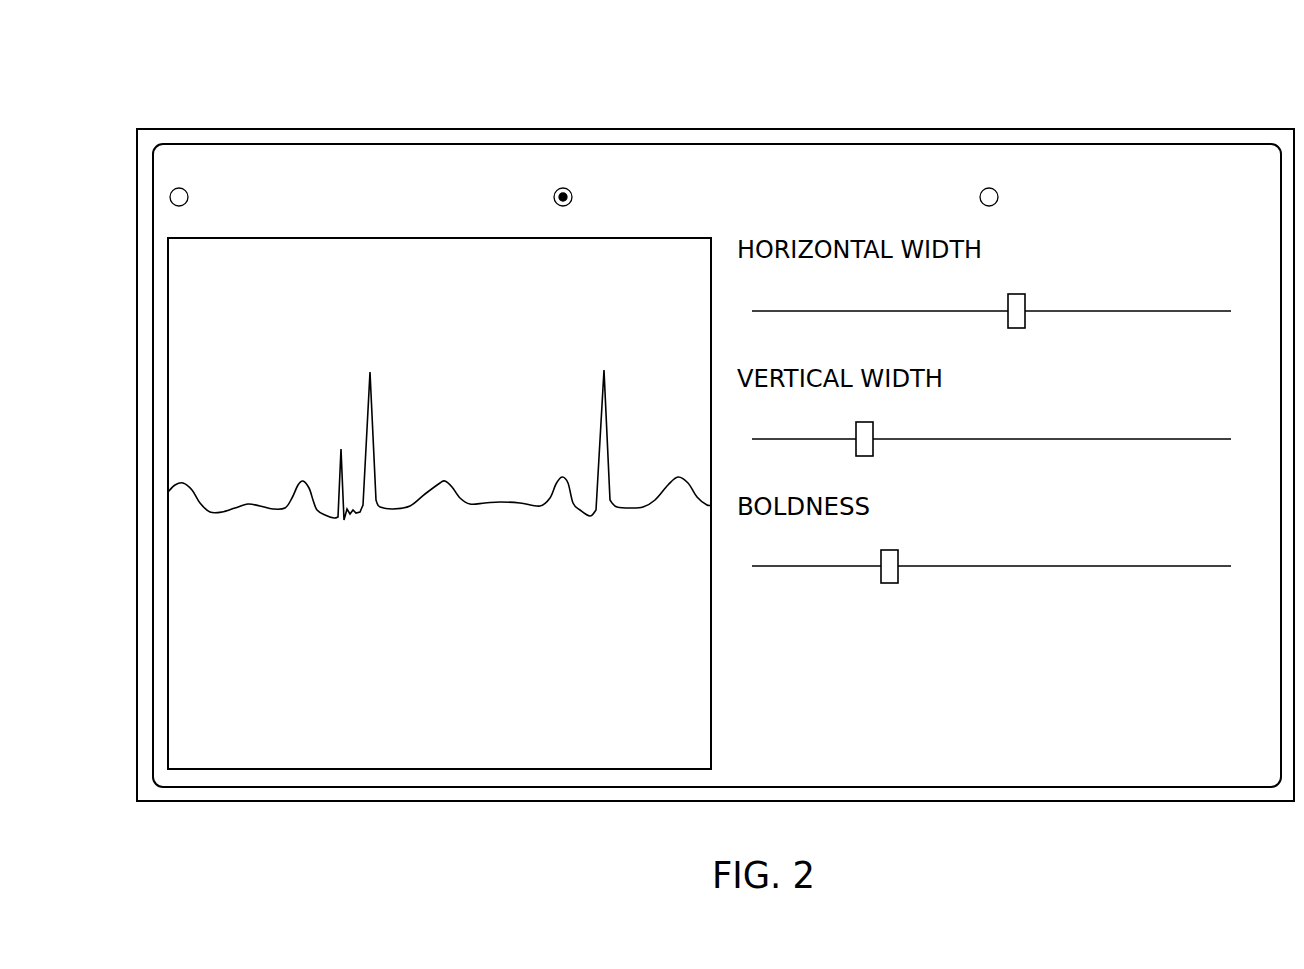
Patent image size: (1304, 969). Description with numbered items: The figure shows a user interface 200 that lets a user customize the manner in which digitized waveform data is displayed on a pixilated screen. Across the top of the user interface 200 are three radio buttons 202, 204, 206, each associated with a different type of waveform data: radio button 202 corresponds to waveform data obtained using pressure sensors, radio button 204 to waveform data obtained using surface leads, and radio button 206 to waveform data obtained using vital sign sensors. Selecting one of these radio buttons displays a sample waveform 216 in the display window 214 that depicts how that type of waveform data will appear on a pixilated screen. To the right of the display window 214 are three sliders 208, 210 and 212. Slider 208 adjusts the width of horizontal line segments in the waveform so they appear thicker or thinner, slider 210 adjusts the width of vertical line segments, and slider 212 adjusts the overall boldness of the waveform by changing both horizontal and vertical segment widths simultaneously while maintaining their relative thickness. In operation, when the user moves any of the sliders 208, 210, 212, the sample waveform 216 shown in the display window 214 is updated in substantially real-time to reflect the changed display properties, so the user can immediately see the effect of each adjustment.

The user interface 200 is at (1140, 83).
The radio button 202 is at (170, 197).
The radio button 204 is at (553, 196).
The radio button 206 is at (980, 197).
The slider 208 is at (1017, 328).
The slider 210 is at (873, 424).
The slider 212 is at (890, 583).
The display window 214 is at (397, 238).
The sample waveform 216 is at (341, 449).